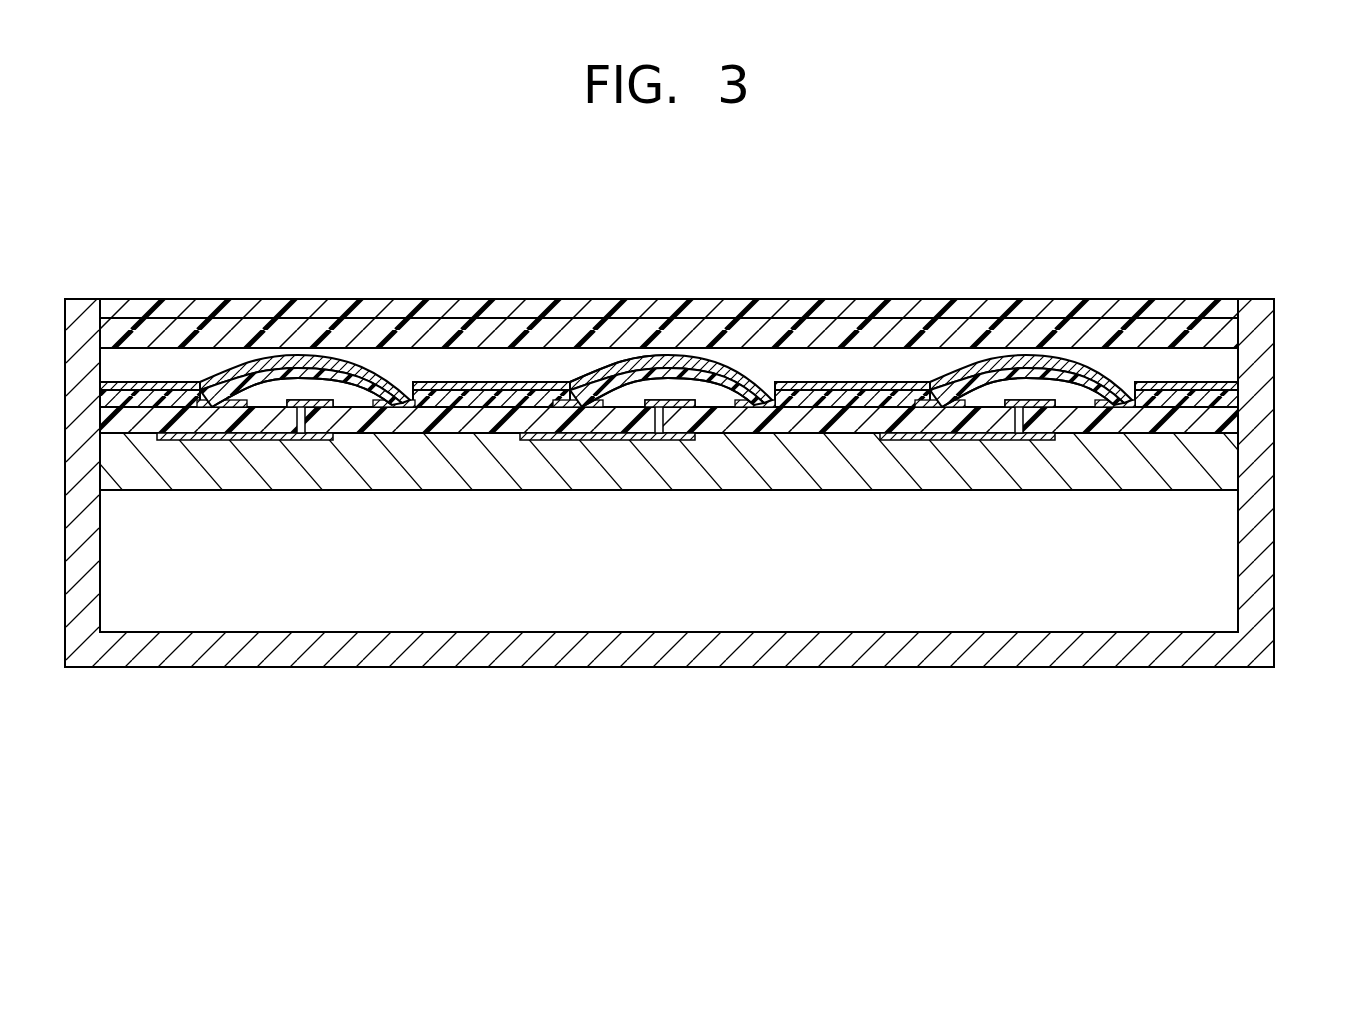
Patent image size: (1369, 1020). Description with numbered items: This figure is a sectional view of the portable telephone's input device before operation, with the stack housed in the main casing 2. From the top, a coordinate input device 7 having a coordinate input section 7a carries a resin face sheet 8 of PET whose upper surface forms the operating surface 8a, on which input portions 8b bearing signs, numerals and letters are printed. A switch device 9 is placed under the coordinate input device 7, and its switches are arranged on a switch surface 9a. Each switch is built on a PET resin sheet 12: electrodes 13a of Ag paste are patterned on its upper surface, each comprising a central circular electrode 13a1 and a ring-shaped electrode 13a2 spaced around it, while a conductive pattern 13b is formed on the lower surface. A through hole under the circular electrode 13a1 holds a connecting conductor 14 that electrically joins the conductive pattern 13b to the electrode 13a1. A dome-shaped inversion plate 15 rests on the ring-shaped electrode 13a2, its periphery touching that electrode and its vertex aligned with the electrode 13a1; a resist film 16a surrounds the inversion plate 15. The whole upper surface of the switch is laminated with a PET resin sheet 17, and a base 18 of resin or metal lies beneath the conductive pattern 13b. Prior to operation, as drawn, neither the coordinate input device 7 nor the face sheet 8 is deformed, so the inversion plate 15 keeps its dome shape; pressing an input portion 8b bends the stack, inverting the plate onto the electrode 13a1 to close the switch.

The main casing 2 is at (1258, 587).
The coordinate input device 7 is at (1215, 315).
The coordinate input section 7a is at (990, 318).
The face sheet 8 is at (1087, 330).
The operating surface 8a is at (900, 347).
The input portion 8b is at (740, 318).
The switch device 9 is at (1262, 452).
The switch surface 9a is at (599, 352).
The resin sheet 12 is at (844, 425).
The electrode 13a is at (780, 390).
The circular electrode 13a1 is at (307, 402).
The ring-shaped electrode 13a2 is at (205, 400).
The conductive pattern 13b is at (203, 440).
The connecting conductor 14 is at (302, 427).
The inversion plate 15 is at (376, 390).
The resist film 16a is at (440, 393).
The resin sheet 17 is at (124, 383).
The base 18 is at (1115, 486).